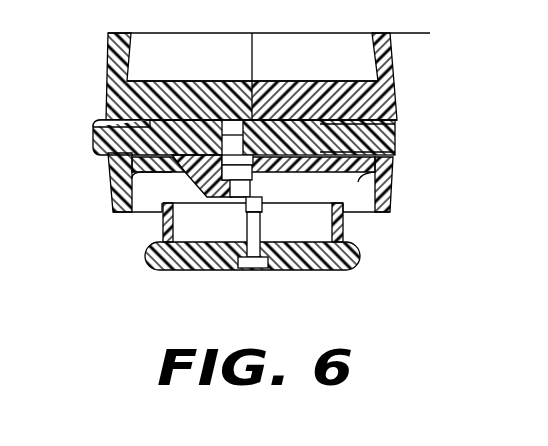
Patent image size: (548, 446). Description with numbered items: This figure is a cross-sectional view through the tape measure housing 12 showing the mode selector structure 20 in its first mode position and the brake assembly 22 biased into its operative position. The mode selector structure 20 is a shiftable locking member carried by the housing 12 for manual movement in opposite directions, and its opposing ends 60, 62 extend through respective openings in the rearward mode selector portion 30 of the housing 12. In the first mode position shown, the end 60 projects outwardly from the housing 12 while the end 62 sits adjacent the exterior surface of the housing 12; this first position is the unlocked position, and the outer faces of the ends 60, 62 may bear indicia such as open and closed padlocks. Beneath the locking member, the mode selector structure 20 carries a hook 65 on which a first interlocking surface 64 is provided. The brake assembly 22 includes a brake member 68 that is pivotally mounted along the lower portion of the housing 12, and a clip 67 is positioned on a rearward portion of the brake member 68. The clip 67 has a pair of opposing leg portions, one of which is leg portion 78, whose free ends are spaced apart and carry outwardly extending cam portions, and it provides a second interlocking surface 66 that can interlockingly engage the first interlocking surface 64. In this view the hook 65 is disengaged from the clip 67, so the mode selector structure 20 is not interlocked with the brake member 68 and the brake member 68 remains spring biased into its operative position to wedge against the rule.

The housing 12 is at (396, 58).
The mode selector portion 30 is at (395, 96).
The mode selector structure 20 is at (98, 146).
The end 60 is at (92, 128).
The end 62 is at (395, 136).
The brake assembly 22 is at (360, 251).
The hook 65 is at (218, 197).
The first interlocking surface 64 is at (236, 187).
The leg portion 78 is at (244, 208).
The clip 67 is at (264, 225).
The second interlocking surface 66 is at (262, 212).
The brake member 68 is at (338, 270).